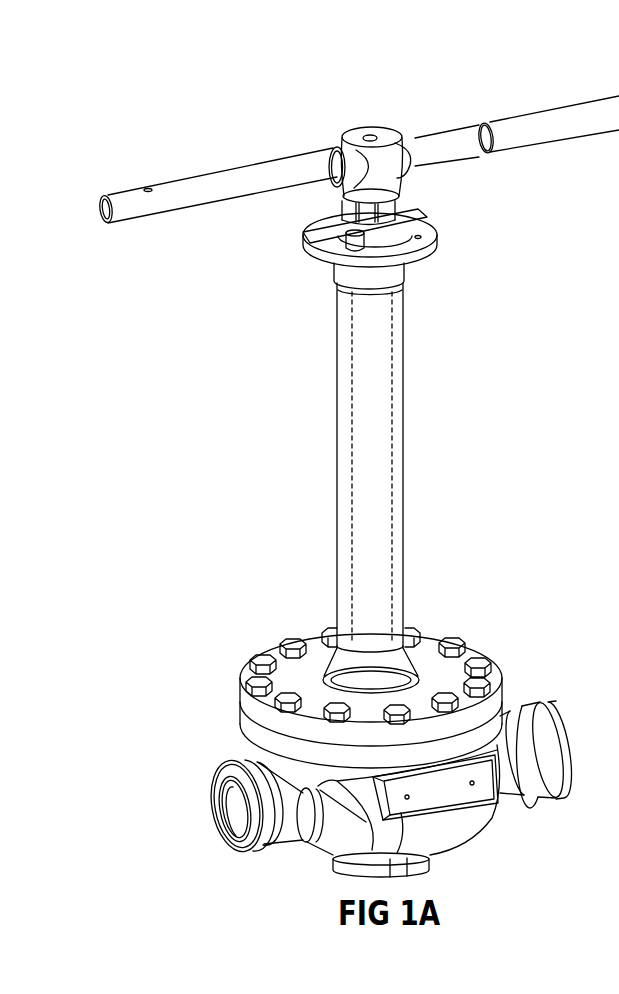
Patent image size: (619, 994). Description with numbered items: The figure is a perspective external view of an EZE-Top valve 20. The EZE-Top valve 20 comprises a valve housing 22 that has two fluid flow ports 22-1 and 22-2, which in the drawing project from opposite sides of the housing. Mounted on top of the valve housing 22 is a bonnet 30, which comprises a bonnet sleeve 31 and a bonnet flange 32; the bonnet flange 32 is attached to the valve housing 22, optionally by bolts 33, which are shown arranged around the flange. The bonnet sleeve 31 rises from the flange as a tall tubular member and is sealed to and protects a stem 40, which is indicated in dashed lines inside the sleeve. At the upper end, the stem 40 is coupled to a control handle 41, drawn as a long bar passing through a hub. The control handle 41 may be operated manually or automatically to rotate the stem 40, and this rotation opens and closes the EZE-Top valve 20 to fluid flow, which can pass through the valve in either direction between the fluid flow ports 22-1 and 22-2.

The EZE-Top valve 20 is at (261, 526).
The control handle 41 is at (443, 155).
The stem 40 is at (378, 461).
The bonnet 30 is at (417, 540).
The bonnet sleeve 31 is at (389, 618).
The bonnet flange 32 is at (430, 680).
The bolts 33 is at (288, 695).
The valve housing 22 is at (467, 820).
The fluid flow port 22-1 is at (575, 742).
The fluid flow port 22-2 is at (240, 807).